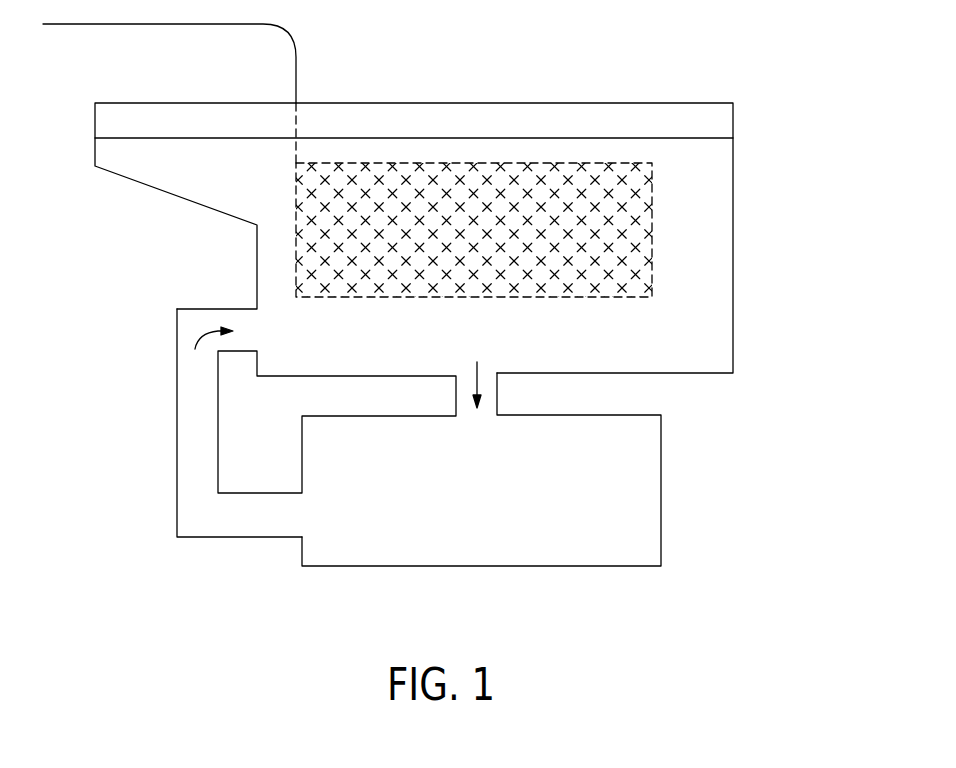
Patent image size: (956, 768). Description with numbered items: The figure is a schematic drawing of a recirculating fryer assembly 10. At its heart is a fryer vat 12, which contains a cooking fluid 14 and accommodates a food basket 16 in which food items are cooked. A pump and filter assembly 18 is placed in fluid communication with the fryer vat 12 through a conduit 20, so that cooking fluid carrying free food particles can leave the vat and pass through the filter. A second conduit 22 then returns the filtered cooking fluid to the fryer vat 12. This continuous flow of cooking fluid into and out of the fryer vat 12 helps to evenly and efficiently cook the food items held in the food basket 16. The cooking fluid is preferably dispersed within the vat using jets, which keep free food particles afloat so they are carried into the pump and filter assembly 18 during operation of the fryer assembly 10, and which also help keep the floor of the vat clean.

The recirculating fryer assembly 10 is at (787, 342).
The fryer vat 12 is at (737, 238).
The cooking fluid 14 is at (725, 168).
The food basket 16 is at (355, 297).
The pump and filter assembly 18 is at (370, 560).
The conduit 20 is at (492, 395).
The conduit 22 is at (183, 430).